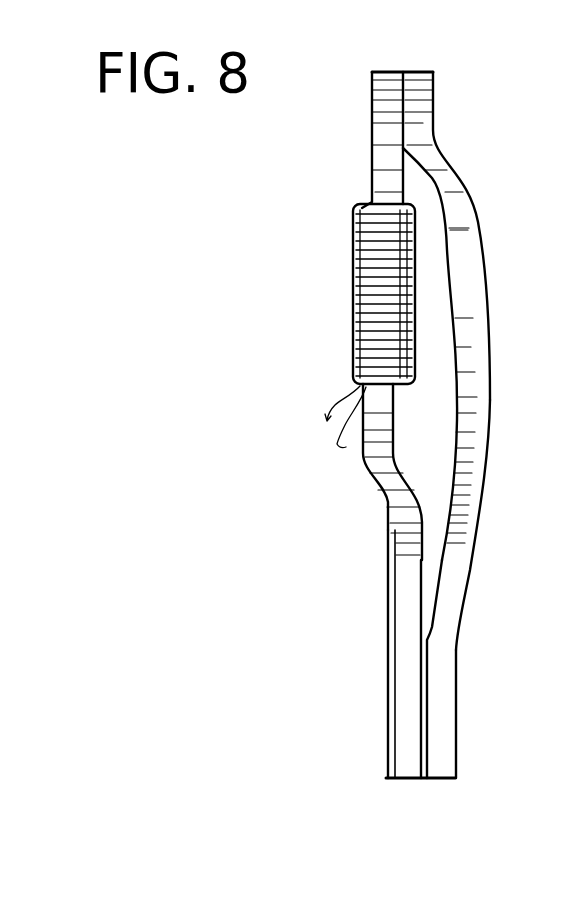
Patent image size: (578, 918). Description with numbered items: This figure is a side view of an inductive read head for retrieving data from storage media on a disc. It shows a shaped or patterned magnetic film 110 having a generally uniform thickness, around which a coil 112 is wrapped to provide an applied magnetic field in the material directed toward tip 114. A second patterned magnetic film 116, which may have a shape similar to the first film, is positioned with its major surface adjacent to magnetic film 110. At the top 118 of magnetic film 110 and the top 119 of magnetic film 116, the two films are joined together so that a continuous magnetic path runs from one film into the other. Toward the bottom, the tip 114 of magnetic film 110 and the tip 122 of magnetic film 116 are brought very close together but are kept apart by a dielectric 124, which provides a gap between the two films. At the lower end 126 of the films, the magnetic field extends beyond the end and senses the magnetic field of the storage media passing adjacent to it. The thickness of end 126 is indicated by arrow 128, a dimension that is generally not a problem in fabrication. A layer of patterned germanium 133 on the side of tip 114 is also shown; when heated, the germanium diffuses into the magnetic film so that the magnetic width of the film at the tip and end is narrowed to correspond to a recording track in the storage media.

The magnetic film 110 is at (378, 504).
The coil 112 is at (355, 243).
The tip 114 is at (397, 697).
The patterned magnetic film 116 is at (492, 256).
The top 118 is at (370, 112).
The top 119 is at (433, 112).
The tip 122 is at (453, 703).
The dielectric 124 is at (428, 665).
The end 126 is at (417, 790).
The arrow 128 is at (318, 737).
The patterned germanium 133 is at (387, 598).